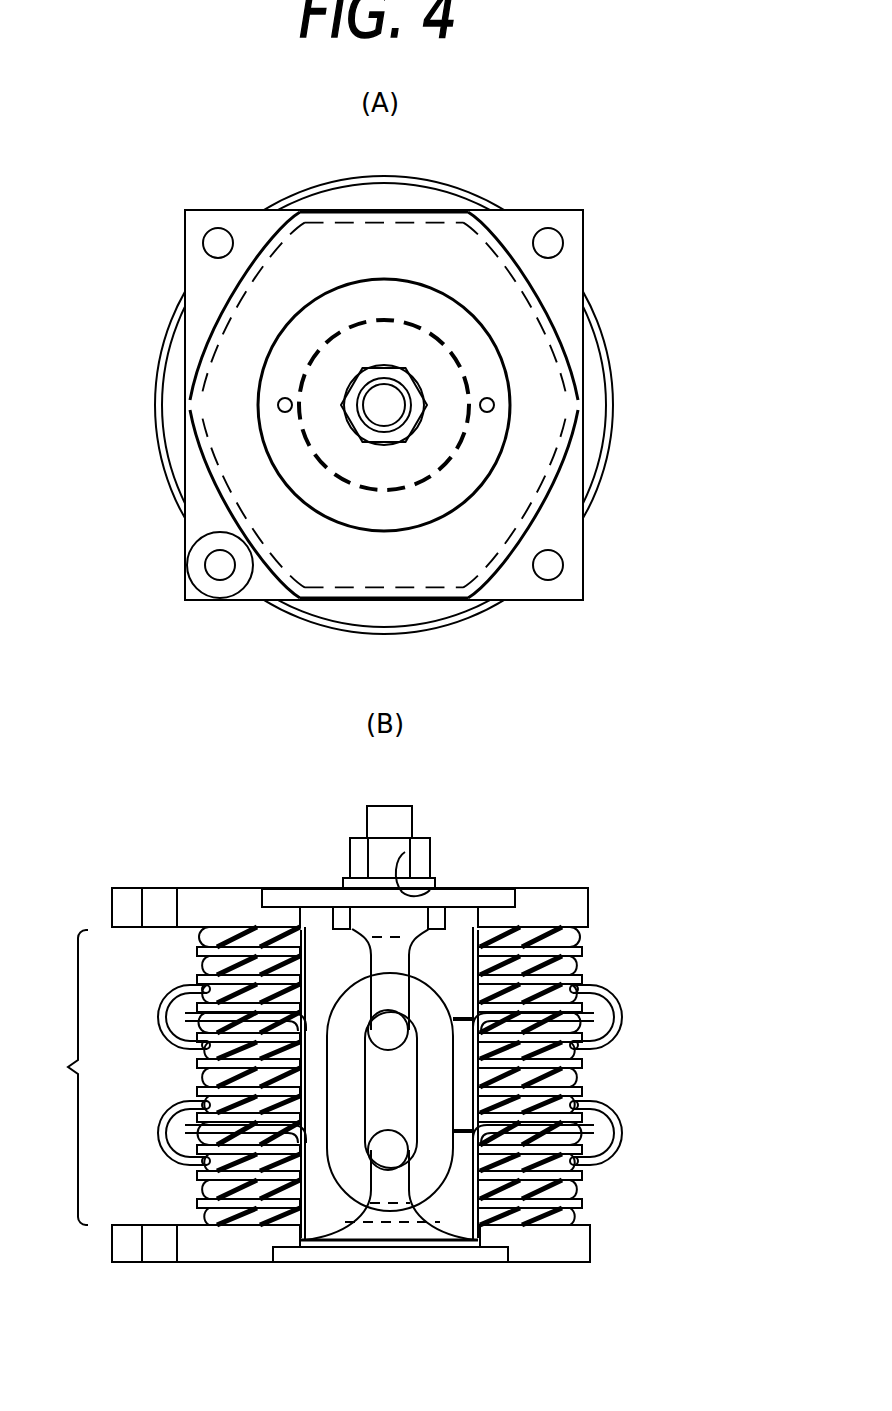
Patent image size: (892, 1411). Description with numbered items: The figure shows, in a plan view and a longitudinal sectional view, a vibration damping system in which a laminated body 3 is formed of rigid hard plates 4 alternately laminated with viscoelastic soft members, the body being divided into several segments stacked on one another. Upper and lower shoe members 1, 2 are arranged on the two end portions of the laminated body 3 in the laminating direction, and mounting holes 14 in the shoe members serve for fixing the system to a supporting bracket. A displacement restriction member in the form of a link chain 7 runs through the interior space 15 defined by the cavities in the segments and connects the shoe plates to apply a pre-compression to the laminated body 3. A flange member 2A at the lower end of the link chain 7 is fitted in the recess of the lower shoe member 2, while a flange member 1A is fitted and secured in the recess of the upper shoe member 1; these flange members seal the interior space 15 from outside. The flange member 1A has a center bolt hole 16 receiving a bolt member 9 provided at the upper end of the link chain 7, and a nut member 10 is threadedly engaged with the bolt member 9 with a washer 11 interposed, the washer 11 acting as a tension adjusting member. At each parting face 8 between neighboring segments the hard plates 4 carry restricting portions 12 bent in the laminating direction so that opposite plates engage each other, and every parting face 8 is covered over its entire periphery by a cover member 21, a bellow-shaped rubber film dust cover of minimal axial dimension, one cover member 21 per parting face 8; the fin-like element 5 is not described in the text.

The upper shoe member 1 is at (560, 280).
The flange member 1A is at (480, 448).
The lower shoe member 2 is at (235, 1248).
The flange member 2A is at (470, 1252).
The laminated body 3 is at (359, 718).
The hard plate 4 is at (530, 948).
The metal fin 5 is at (575, 963).
The link chain 7 is at (418, 1002).
The parting face 8 is at (195, 1019).
The bolt member 9 is at (380, 422).
The nut member 10 is at (420, 388).
The washer 11 is at (358, 882).
The restricting portion 12 is at (592, 1018).
The mounting hole 14 is at (215, 243).
The interior space 15 is at (470, 1160).
The center bolt hole 16 is at (405, 878).
The cover member 21 is at (612, 405).